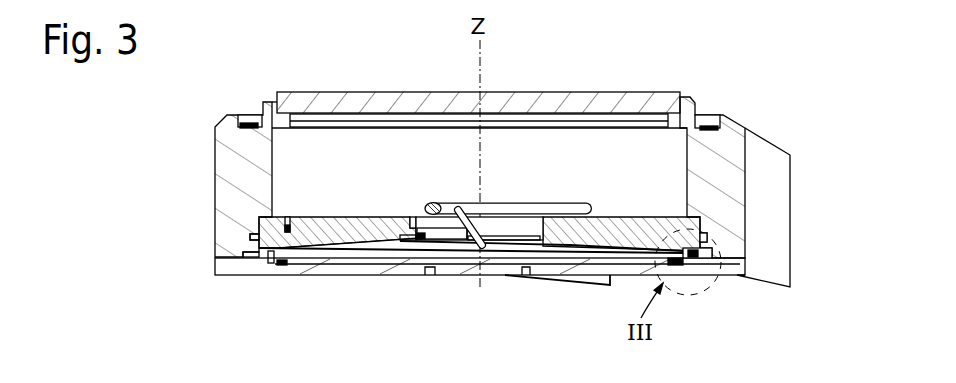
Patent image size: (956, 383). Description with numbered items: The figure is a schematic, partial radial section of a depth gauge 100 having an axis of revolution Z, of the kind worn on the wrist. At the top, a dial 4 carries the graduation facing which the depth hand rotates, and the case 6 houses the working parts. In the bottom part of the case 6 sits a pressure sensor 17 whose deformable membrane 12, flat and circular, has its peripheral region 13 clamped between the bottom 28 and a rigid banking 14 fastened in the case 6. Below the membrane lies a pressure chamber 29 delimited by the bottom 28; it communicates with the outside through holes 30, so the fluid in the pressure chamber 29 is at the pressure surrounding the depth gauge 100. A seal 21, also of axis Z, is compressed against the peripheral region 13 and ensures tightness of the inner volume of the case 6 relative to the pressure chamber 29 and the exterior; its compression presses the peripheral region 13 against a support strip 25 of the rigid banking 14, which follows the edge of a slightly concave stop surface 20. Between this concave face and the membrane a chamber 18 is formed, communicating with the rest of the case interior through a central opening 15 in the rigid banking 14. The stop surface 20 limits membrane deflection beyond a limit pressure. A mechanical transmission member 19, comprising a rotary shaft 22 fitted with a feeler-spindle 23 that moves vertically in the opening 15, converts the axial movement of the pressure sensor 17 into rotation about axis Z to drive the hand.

The depth gauge 100 is at (708, 71).
The dial 4 is at (602, 128).
The case 6 is at (215, 200).
The deformable membrane 12 is at (447, 259).
The peripheral region 13 is at (302, 240).
The rigid banking 14 is at (343, 226).
The central opening 15 is at (517, 228).
The pressure sensor 17 is at (534, 257).
The chamber 18 is at (395, 222).
The mechanical transmission member 19 is at (550, 202).
The stop surface 20 is at (362, 249).
The seal 21 is at (673, 267).
The rotary shaft 22 is at (487, 210).
The feeler-spindle 23 is at (474, 209).
The support strip 25 is at (702, 252).
The bottom 28 is at (245, 265).
The pressure chamber 29 is at (312, 262).
The holes 30 is at (430, 271).